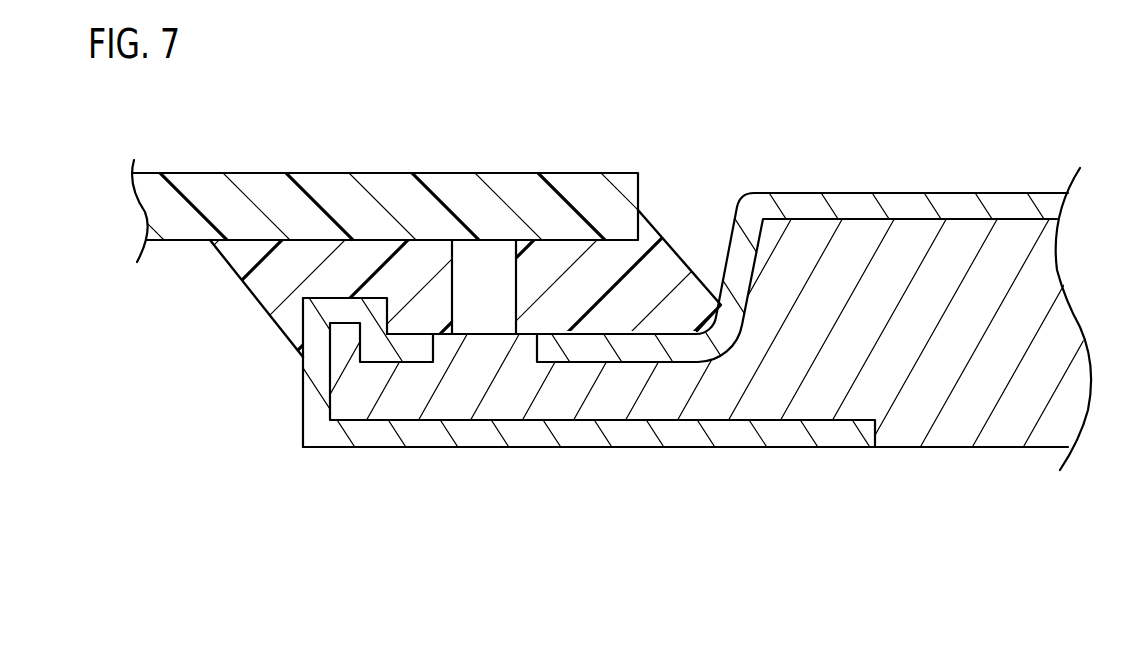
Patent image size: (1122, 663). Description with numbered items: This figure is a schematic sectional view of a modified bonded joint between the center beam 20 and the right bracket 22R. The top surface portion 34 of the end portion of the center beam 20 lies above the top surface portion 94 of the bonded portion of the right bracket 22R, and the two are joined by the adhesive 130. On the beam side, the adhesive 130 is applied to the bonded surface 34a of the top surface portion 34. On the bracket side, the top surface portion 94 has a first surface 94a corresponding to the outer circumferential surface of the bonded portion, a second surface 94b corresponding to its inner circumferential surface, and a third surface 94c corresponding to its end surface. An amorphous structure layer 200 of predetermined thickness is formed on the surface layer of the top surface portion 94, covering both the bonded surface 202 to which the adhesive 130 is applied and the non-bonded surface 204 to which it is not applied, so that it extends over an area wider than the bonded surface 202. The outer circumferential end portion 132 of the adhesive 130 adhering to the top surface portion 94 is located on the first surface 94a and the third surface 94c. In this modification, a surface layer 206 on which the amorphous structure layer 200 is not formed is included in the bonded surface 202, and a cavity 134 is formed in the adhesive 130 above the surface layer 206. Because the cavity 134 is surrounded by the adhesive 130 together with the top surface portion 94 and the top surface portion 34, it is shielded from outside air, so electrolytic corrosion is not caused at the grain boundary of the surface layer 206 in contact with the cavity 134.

The center beam 20 is at (415, 201).
The top surface portion 34 is at (415, 212).
The bonded surface 34a is at (240, 244).
The adhesive 130 is at (452, 296).
The outer circumferential end portion 132 is at (302, 362).
The cavity 134 is at (471, 276).
The surface layer 206 is at (492, 355).
The bonded surface 202 is at (587, 333).
The non-bonded surface 204 is at (735, 231).
The right bracket 22R is at (636, 317).
The top surface portion 94 is at (636, 321).
The first surface 94a is at (408, 332).
The second surface 94b is at (573, 447).
The third surface 94c is at (303, 417).
The amorphous structure layer 200 is at (636, 321).